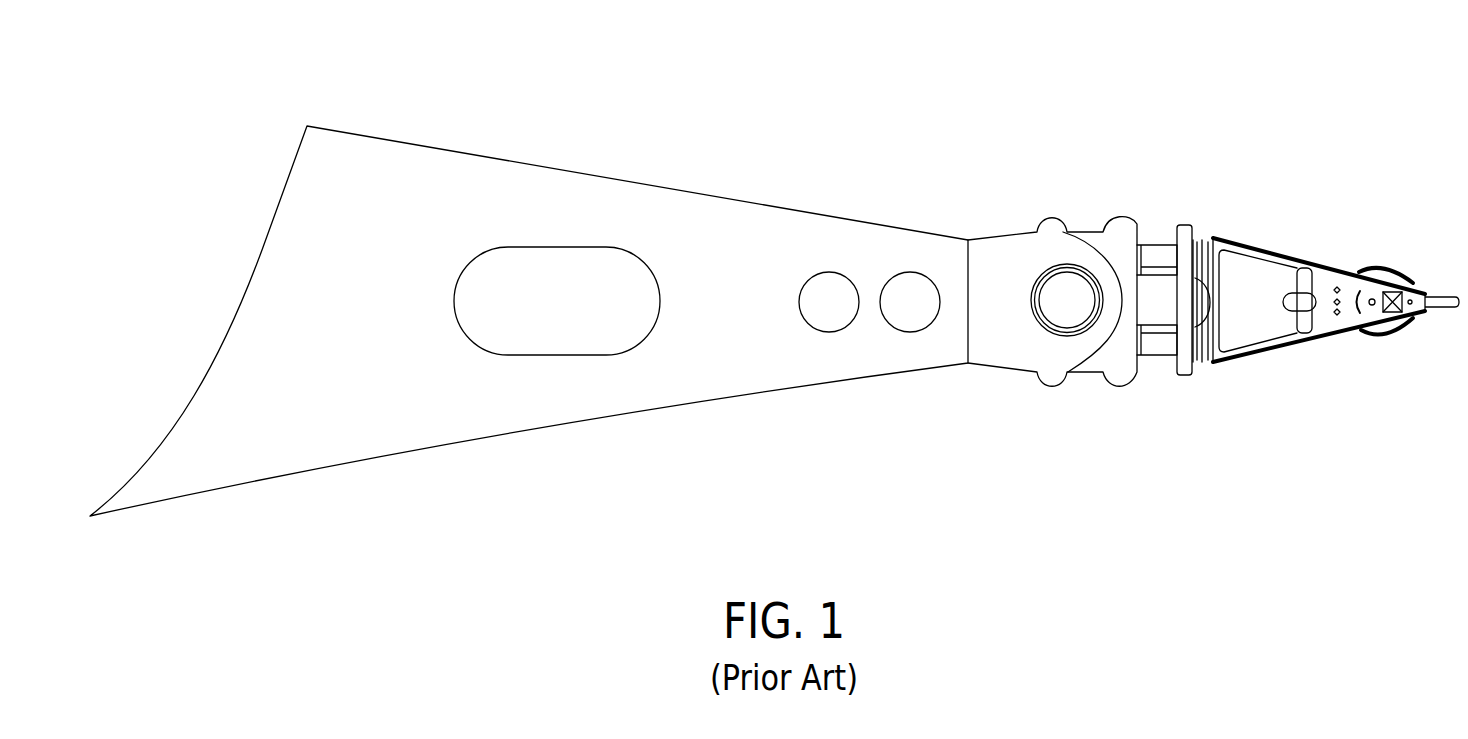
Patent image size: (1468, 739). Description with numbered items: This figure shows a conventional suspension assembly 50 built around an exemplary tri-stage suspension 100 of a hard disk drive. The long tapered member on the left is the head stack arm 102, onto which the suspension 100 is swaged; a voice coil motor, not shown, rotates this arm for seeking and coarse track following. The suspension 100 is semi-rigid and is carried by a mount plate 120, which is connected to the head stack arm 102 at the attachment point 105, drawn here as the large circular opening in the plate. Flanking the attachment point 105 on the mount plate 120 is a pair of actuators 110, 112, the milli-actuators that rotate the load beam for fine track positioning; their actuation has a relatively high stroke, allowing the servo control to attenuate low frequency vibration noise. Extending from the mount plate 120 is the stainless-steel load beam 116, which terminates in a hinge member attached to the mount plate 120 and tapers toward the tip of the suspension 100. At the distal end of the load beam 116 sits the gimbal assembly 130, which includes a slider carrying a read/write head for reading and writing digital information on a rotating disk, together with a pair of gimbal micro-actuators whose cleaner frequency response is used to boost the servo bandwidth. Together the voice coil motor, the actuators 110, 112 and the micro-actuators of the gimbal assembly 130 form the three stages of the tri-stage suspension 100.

The suspension assembly 50 is at (263, 116).
The head stack arm 102 is at (555, 397).
The attachment point 105 is at (1038, 276).
The actuator 110 is at (1155, 260).
The actuator 112 is at (1153, 342).
The mount plate 120 is at (1095, 357).
The load beam 116 is at (1288, 252).
The tri-stage suspension 100 is at (1323, 243).
The gimbal assembly 130 is at (1380, 263).